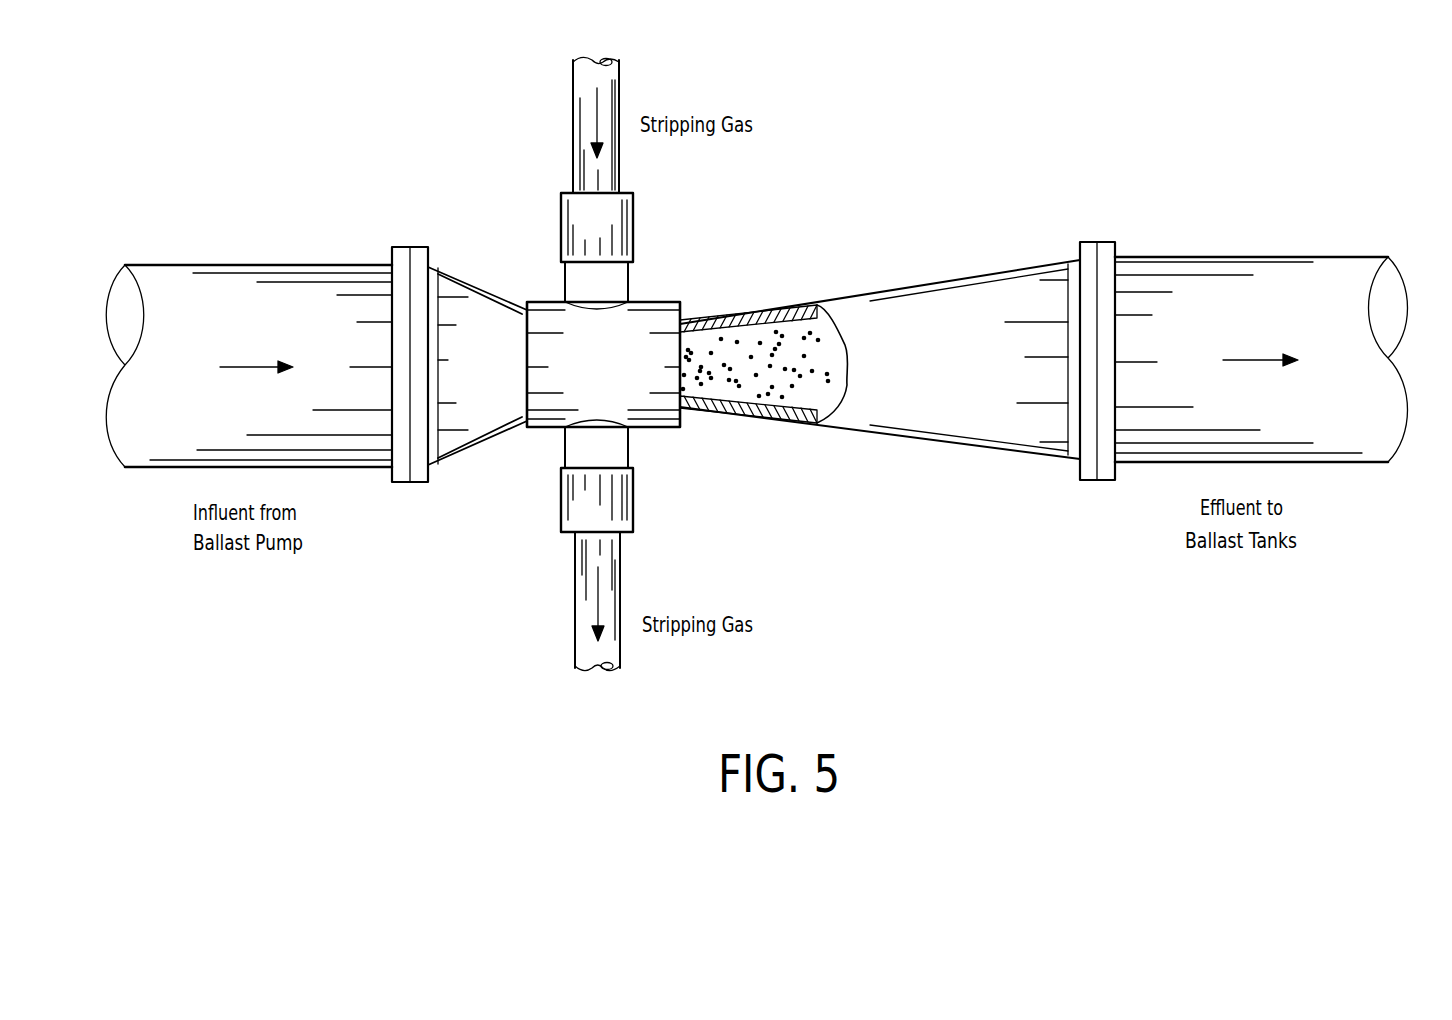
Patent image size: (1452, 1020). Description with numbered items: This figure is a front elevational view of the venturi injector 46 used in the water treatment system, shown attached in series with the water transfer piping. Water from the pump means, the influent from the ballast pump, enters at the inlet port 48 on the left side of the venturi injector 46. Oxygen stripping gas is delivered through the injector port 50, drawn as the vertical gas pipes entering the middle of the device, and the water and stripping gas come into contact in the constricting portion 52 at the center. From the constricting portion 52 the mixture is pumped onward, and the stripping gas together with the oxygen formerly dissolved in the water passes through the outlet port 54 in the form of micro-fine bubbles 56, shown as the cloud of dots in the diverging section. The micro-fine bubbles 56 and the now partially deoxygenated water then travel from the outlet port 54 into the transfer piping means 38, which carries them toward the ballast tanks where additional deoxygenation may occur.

The transfer piping means 38 is at (172, 460).
The venturi injector 46 is at (847, 298).
The inlet port 48 is at (418, 483).
The injector port 50 is at (635, 237).
The constricting portion 52 is at (653, 417).
The outlet port 54 is at (1090, 482).
The micro-fine bubbles 56 is at (773, 390).